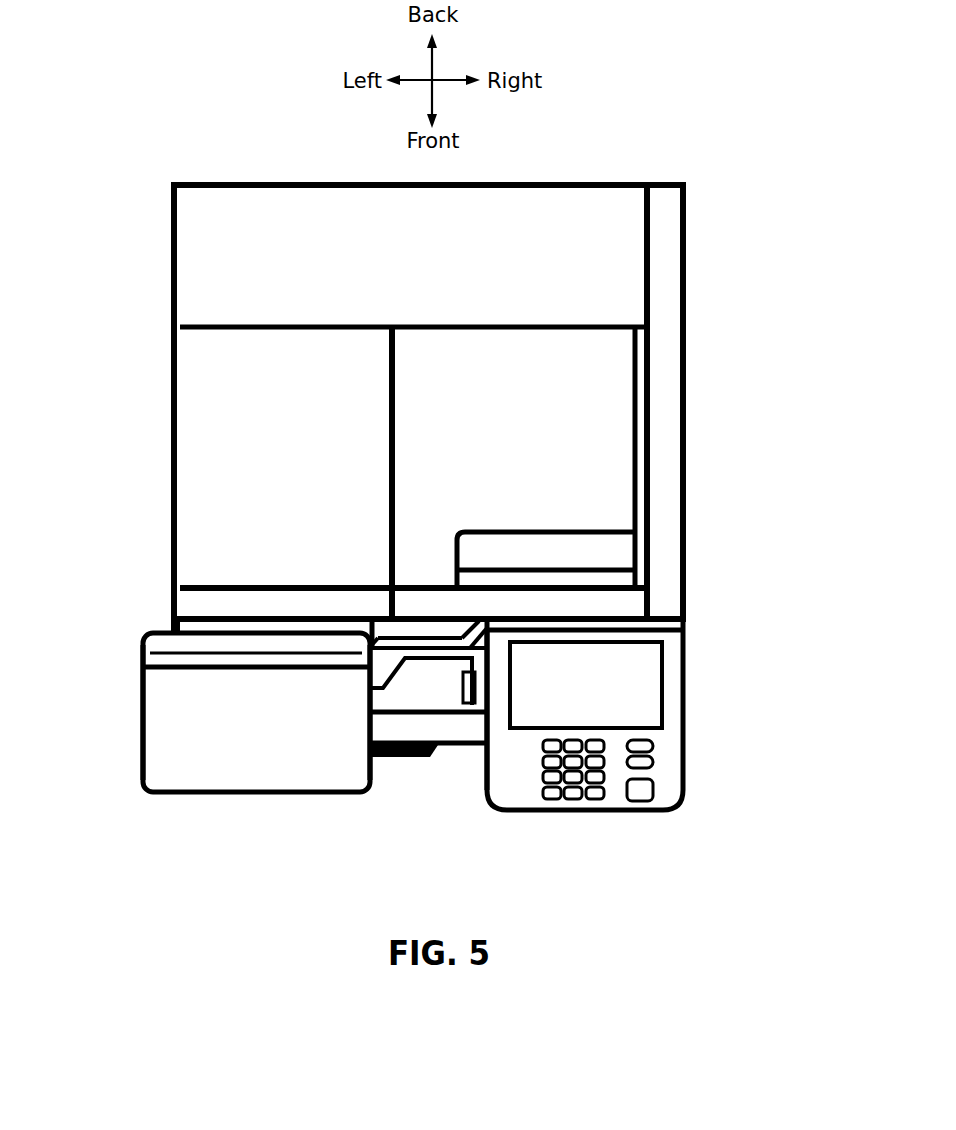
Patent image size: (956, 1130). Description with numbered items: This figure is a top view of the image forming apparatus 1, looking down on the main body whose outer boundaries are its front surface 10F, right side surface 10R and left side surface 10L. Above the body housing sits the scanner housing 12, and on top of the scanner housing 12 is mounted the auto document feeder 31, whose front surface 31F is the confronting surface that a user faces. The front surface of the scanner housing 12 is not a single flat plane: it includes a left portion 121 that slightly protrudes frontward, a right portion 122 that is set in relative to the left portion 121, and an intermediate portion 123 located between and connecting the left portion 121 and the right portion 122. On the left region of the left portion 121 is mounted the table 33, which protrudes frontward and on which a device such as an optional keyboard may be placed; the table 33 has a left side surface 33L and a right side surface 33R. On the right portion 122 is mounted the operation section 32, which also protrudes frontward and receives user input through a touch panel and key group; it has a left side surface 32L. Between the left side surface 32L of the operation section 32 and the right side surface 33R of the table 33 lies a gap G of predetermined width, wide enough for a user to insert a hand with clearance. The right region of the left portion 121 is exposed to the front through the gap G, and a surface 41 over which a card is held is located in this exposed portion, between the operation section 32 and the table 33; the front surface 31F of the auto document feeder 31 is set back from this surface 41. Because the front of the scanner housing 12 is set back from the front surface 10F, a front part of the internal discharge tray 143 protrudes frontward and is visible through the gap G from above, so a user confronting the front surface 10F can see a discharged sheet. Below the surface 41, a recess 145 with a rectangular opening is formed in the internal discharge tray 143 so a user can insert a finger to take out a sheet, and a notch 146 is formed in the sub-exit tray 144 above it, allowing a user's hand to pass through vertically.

The image forming apparatus 1 is at (714, 155).
The left side surface 10L is at (172, 495).
The right side surface 10R is at (686, 474).
The front surface 10F is at (452, 760).
The scanner housing 12 is at (668, 393).
The auto document feeder 31 is at (197, 418).
The front surface 31F is at (342, 622).
The left portion 121 is at (265, 632).
The right portion 122 is at (590, 613).
The intermediate portion 123 is at (470, 630).
The surface over which a card is held 41 is at (402, 702).
The internal discharge tray 143 is at (428, 697).
The sub-exit tray 144 is at (370, 678).
The recess 145 is at (458, 690).
The notch 146 is at (385, 715).
The operation section 32 is at (668, 690).
The left side surface 32L is at (487, 775).
The table 33 is at (243, 768).
The left side surface 33L is at (143, 719).
The right side surface 33R is at (373, 770).
The gap G is at (425, 792).